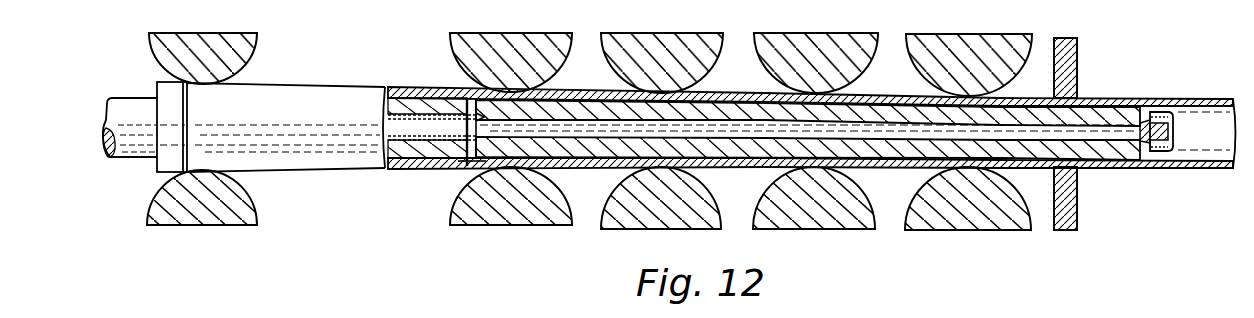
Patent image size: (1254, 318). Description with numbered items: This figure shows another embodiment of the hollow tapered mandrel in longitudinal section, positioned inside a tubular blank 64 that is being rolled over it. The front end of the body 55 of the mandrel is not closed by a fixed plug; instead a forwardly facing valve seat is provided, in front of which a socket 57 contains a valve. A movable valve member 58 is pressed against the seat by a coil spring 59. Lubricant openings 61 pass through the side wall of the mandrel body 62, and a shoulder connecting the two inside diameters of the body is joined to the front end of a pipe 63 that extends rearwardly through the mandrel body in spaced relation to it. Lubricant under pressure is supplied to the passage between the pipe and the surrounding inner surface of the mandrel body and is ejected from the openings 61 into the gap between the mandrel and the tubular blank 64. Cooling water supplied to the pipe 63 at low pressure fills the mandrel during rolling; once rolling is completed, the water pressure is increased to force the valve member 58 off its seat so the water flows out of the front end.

The body 55 is at (140, 101).
The tubular blank 64 is at (320, 100).
The pipe 63 is at (416, 114).
The mandrel body 62 is at (485, 117).
The lubricant openings 61 is at (468, 160).
The movable valve member 58 is at (1153, 116).
The coil spring 59 is at (1174, 134).
The socket 57 is at (1147, 147).